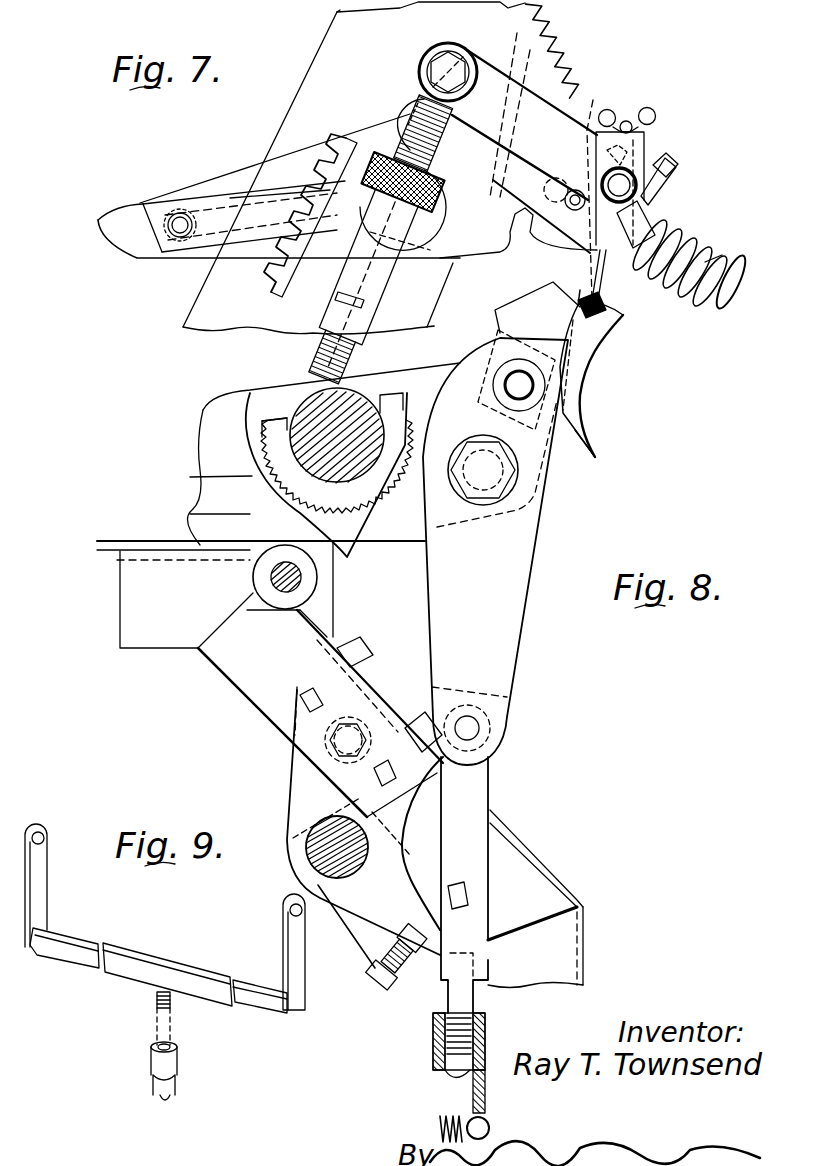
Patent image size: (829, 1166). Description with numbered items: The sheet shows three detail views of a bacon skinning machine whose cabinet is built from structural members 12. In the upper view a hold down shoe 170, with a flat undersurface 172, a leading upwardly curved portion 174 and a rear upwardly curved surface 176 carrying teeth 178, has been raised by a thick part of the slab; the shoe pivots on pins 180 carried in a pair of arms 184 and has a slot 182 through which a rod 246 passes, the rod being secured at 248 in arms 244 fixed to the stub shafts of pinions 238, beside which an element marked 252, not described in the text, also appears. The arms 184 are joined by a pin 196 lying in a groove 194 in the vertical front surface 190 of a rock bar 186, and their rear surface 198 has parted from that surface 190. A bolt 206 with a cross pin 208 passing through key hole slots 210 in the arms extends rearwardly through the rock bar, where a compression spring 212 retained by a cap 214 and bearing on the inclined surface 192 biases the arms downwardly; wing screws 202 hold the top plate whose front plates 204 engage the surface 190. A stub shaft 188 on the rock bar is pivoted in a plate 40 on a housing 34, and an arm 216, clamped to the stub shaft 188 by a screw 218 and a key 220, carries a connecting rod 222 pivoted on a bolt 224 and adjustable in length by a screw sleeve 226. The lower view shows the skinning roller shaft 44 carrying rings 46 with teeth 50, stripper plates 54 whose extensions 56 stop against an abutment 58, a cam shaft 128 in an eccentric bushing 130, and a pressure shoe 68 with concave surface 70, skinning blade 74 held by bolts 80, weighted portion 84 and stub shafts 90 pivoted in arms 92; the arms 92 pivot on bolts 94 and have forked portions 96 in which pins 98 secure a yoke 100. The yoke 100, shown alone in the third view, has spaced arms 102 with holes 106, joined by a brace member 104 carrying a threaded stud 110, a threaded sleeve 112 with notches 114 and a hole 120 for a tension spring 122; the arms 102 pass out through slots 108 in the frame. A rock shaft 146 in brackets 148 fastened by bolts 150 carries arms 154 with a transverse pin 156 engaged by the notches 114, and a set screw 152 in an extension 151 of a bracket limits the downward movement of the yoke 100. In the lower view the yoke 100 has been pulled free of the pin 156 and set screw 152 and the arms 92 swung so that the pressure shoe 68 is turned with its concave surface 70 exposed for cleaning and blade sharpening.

In FIG. 8, the structural members 12 is at (135, 597).
In FIG. 7, the housing 34 is at (345, 28).
In FIG. 8, the plate 40 is at (530, 493).
In FIG. 8, the shaft 44 is at (320, 403).
In FIG. 8, the rings 46 is at (262, 421).
In FIG. 8, the teeth 50 is at (263, 473).
In FIG. 8, the stripper plates 54 is at (390, 462).
In FIG. 8, the extension 56 is at (357, 536).
In FIG. 8, the abutment 58 is at (330, 563).
In FIG. 8, the pressure shoe 68 is at (608, 350).
In FIG. 8, the concave surface 70 is at (586, 368).
In FIG. 8, the skinning blade 74 is at (583, 430).
In FIG. 8, the bolts 80 is at (573, 323).
In FIG. 8, the weighted portion 84 is at (517, 300).
In FIG. 8, the stub shaft 90 is at (535, 387).
In FIG. 8, the arms 92 is at (528, 540).
In FIG. 8, the bolts 94 is at (495, 465).
In FIG. 8, the forked portion 96 is at (500, 722).
In FIG. 8, the pin 98 is at (476, 724).
In FIG. 8, the yoke 100 is at (493, 797).
In FIG. 9, the yoke 100 is at (40, 826).
In FIG. 8, the arms 102 is at (492, 777).
In FIG. 9, the arms 102 is at (40, 885).
In FIG. 8, the brace member 104 is at (465, 1000).
In FIG. 9, the brace member 104 is at (72, 945).
In FIG. 9, the holes 106 is at (47, 841).
In FIG. 8, the slots 108 is at (553, 875).
In FIG. 8, the threaded stud 110 is at (440, 1028).
In FIG. 9, the threaded stud 110 is at (157, 997).
In FIG. 8, the sleeve 112 is at (490, 1035).
In FIG. 9, the sleeve 112 is at (155, 1065).
In FIG. 8, the notches 114 is at (450, 1068).
In FIG. 9, the notches 114 is at (176, 1084).
In FIG. 8, the hole 120 is at (485, 1115).
In FIG. 9, the hole 120 is at (168, 1102).
In FIG. 8, the tension spring 122 is at (440, 1120).
In FIG. 8, the shaft 128 is at (302, 580).
In FIG. 8, the eccentric bushing 130 is at (262, 575).
In FIG. 8, the rock shaft 146 is at (327, 830).
In FIG. 8, the brackets 148 is at (305, 775).
In FIG. 8, the bolts 150 is at (365, 657).
In FIG. 8, the extension 151 is at (415, 897).
In FIG. 8, the set screw 152 is at (377, 996).
In FIG. 8, the arms 154 is at (355, 930).
In FIG. 8, the transverse pin 156 is at (400, 938).
In FIG. 7, the hold down shoes 170 is at (213, 163).
In FIG. 7, the undersurface 172 is at (240, 266).
In FIG. 7, the upwardly curved portion 174 is at (100, 238).
In FIG. 7, the upwardly curved surface 176 is at (502, 238).
In FIG. 7, the teeth 178 is at (548, 58).
In FIG. 7, the pivot point 180 is at (418, 95).
In FIG. 7, the slot 182 is at (124, 224).
In FIG. 7, the arms 184 is at (490, 165).
In FIG. 7, the rock bar 186 is at (653, 137).
In FIG. 7, the stub shaft 188 is at (602, 172).
In FIG. 7, the front surface 190 is at (610, 268).
In FIG. 7, the inclined surface 192 is at (640, 270).
In FIG. 7, the groove 194 is at (657, 157).
In FIG. 7, the pin 196 is at (618, 123).
In FIG. 7, the rear surface 198 is at (590, 295).
In FIG. 7, the wing screws 202 is at (655, 109).
In FIG. 7, the plates 204 is at (587, 127).
In FIG. 7, the bolt 206 is at (683, 237).
In FIG. 7, the cross pin 208 is at (573, 212).
In FIG. 7, the key hole slots 210 is at (544, 192).
In FIG. 7, the compression spring 212 is at (717, 250).
In FIG. 7, the cap 214 is at (739, 277).
In FIG. 7, the arm 216 is at (497, 83).
In FIG. 7, the screw 218 is at (679, 163).
In FIG. 7, the key 220 is at (640, 187).
In FIG. 7, the connecting rod 222 is at (413, 123).
In FIG. 7, the bolt 224 is at (443, 60).
In FIG. 7, the adjusting screw sleeve 226 is at (433, 177).
In FIG. 7, the pinion 238 is at (372, 150).
In FIG. 7, the arm 244 is at (260, 202).
In FIG. 7, the rod 246 is at (147, 205).
In FIG. 7, the rod securing connection 248 is at (180, 237).
In FIG. 7, the rack 252 is at (337, 167).